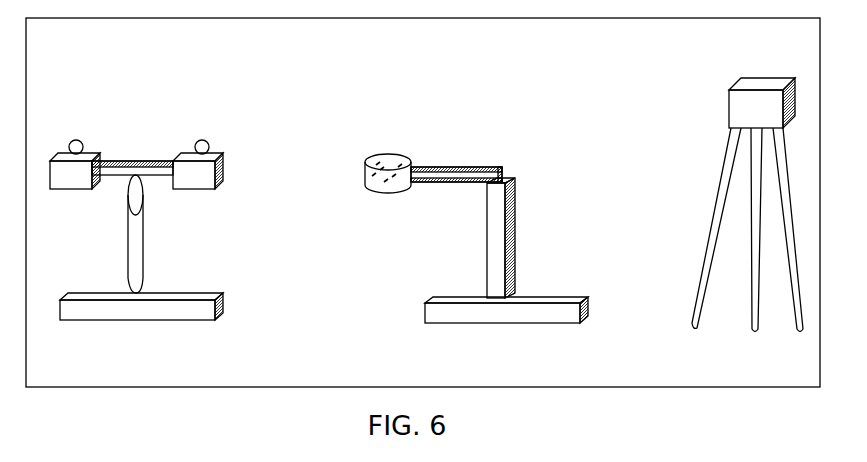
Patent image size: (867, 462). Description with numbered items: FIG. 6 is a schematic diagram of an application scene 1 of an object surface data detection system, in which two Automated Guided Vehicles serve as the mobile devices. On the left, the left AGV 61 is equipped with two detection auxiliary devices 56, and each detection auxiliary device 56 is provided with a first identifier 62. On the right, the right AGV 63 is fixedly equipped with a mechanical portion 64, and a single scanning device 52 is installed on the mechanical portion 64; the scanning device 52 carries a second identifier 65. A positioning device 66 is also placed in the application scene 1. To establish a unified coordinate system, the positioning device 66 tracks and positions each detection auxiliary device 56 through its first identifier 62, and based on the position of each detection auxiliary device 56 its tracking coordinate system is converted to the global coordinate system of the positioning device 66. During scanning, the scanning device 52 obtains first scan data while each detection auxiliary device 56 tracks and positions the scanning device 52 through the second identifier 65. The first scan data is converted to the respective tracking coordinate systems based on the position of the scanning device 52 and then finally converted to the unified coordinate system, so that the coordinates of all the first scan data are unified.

The application scene 1 is at (803, 52).
The scanning device 52 is at (365, 168).
The detection auxiliary device 56 is at (220, 168).
The left AGV 61 is at (198, 295).
The first identifier 62 is at (207, 144).
The right AGV 63 is at (570, 298).
The mechanical portion 64 is at (500, 252).
The second identifier 65 is at (398, 178).
The positioning device 66 is at (733, 112).